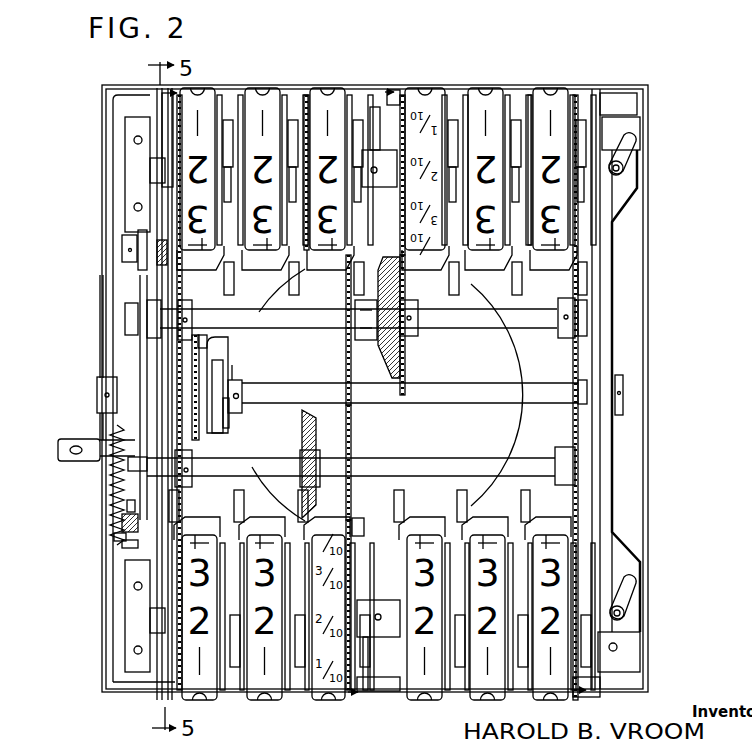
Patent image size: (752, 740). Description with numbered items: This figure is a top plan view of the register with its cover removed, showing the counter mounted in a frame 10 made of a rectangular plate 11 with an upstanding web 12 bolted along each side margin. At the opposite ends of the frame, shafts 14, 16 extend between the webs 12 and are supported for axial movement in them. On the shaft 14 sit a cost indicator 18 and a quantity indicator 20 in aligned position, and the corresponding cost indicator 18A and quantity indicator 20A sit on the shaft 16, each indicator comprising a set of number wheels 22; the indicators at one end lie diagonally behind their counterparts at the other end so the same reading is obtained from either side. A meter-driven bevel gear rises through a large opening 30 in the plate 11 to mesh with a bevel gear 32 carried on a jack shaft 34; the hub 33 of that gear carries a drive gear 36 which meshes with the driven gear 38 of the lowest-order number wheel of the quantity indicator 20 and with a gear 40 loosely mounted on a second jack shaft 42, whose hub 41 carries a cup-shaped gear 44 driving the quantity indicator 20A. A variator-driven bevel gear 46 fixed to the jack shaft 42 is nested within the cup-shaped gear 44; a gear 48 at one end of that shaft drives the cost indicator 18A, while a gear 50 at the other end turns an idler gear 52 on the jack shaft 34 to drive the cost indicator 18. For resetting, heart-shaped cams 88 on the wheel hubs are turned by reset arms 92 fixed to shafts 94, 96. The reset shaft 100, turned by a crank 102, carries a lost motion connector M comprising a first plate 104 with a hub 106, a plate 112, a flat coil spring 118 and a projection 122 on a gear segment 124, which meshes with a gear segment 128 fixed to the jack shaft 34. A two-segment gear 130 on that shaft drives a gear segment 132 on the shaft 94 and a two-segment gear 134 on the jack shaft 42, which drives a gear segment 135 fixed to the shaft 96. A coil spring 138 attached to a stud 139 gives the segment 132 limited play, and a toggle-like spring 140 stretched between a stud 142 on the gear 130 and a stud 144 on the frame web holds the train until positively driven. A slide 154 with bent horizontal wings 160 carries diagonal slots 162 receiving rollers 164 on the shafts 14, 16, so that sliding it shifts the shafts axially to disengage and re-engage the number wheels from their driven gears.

The frame 10 is at (649, 90).
The plate 11 is at (102, 100).
The web 12 is at (158, 100).
The shaft 14 is at (135, 628).
The shaft 16 is at (135, 168).
The cost indicator 18 is at (488, 700).
The cost indicator 18A is at (263, 90).
The quantity indicator 20 is at (266, 703).
The quantity indicator 20A is at (493, 90).
The number wheels 22 is at (205, 90).
The opening 30 is at (512, 358).
The bevel gear 32 is at (306, 440).
The hub 33 is at (321, 450).
The jack shaft 34 is at (150, 478).
The drive gear 36 is at (352, 442).
The driven gear 38 is at (176, 196).
The gear 40 is at (346, 373).
The hub 41 is at (356, 350).
The jack shaft 42 is at (125, 320).
The cup-shaped gear 44 is at (406, 366).
The bevel gear 46 is at (407, 297).
The gear 48 is at (180, 294).
The gear 50 is at (558, 340).
The idler gear 52 is at (556, 427).
The heart-shaped cam 88 is at (228, 120).
The reset arm 92 is at (234, 284).
The shaft 94 is at (366, 524).
The shaft 96 is at (122, 250).
The reset shaft 100 is at (446, 395).
The crank 102 is at (108, 428).
The first plate 104 is at (232, 412).
The hub 106 is at (243, 385).
The plate 112 is at (226, 430).
The flat coil spring 118 is at (229, 350).
The projection 122 is at (203, 334).
The gear segment 124 is at (192, 428).
The gear segment 128 is at (195, 454).
The two-segment gear 130 is at (117, 473).
The gear segment 132 is at (122, 522).
The two-segment gear 134 is at (142, 352).
The gear segment 135 is at (138, 265).
The coil spring 138 is at (118, 538).
The stud 139 is at (128, 506).
The spring 140 is at (58, 451).
The stud 142 is at (110, 414).
The stud 144 is at (125, 548).
The slide 154 is at (612, 243).
The horizontal wings 160 is at (635, 198).
The diagonal slots 162 is at (637, 147).
The rollers 164 is at (624, 167).
The lost motion connector M is at (234, 372).